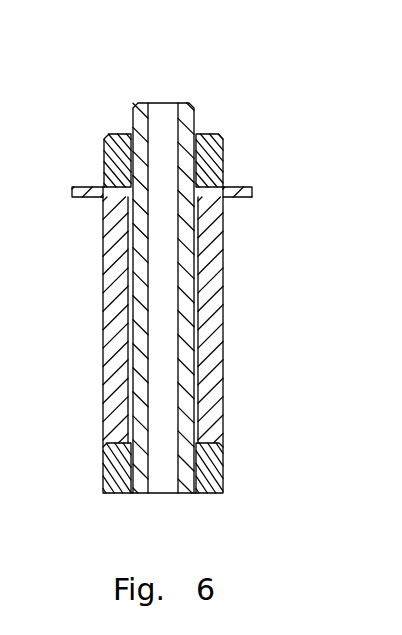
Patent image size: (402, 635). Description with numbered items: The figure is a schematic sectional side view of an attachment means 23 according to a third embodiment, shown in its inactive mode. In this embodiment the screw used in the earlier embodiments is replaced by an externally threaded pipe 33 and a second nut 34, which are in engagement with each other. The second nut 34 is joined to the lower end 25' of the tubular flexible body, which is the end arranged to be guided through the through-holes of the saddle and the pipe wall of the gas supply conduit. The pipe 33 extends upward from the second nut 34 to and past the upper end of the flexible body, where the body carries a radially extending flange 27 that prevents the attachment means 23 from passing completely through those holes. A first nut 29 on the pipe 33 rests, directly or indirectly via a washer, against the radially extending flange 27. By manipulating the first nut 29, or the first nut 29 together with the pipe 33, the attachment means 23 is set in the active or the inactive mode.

The attachment means 23 is at (104, 94).
The lower end of the flexible body 25' is at (127, 346).
The radially extending flange 27 is at (252, 190).
The first nut 29 is at (212, 152).
The externally threaded pipe 33 is at (181, 275).
The second nut 34 is at (200, 465).